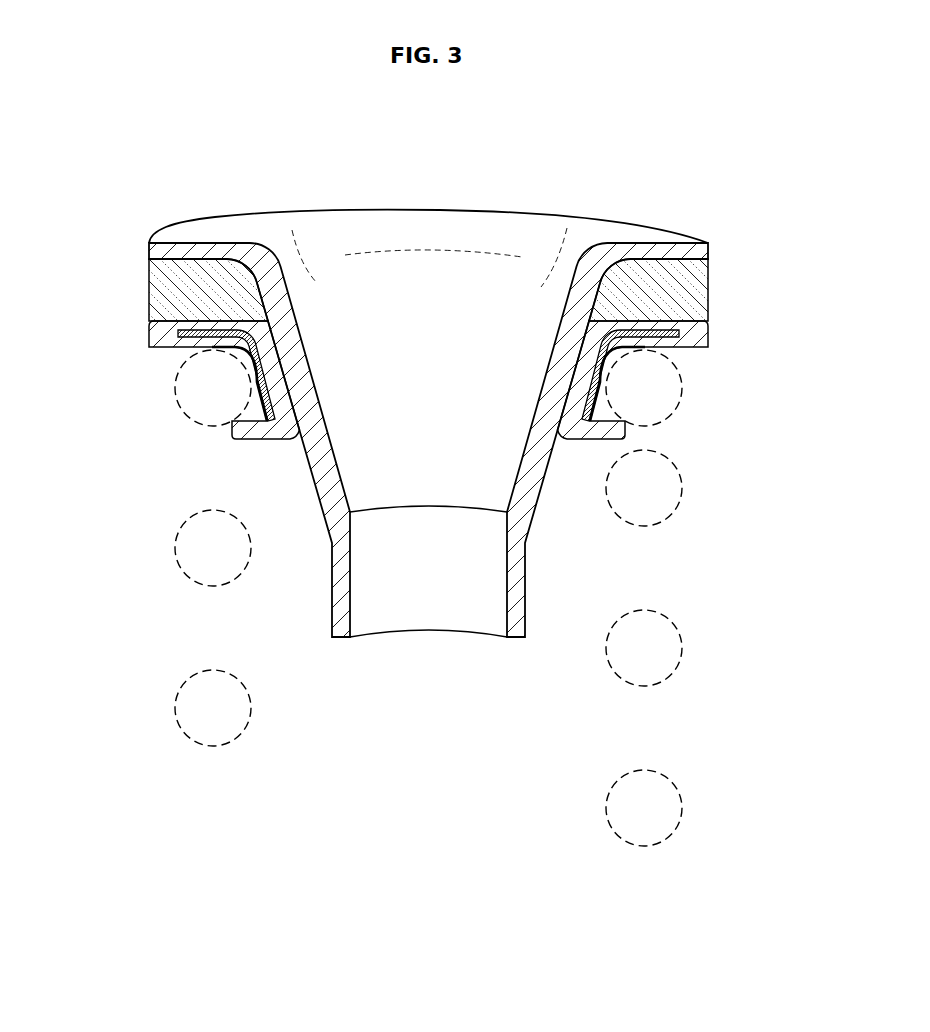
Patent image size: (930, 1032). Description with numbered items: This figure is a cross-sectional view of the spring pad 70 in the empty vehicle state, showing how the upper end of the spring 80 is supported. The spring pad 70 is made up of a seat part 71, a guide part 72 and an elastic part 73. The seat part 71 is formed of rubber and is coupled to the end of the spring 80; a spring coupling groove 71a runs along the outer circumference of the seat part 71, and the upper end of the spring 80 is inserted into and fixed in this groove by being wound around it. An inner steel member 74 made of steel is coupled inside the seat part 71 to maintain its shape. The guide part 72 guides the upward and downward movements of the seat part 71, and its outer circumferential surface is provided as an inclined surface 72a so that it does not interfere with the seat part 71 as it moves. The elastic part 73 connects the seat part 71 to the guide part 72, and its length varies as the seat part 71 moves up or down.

The spring pad 70 is at (564, 208).
The seat part 71 is at (158, 337).
The spring coupling groove 71a is at (252, 381).
The guide part 72 is at (235, 236).
The inclined surface 72a is at (313, 478).
The elastic part 73 is at (693, 287).
The inner steel member 74 is at (675, 342).
The spring 80 is at (683, 398).